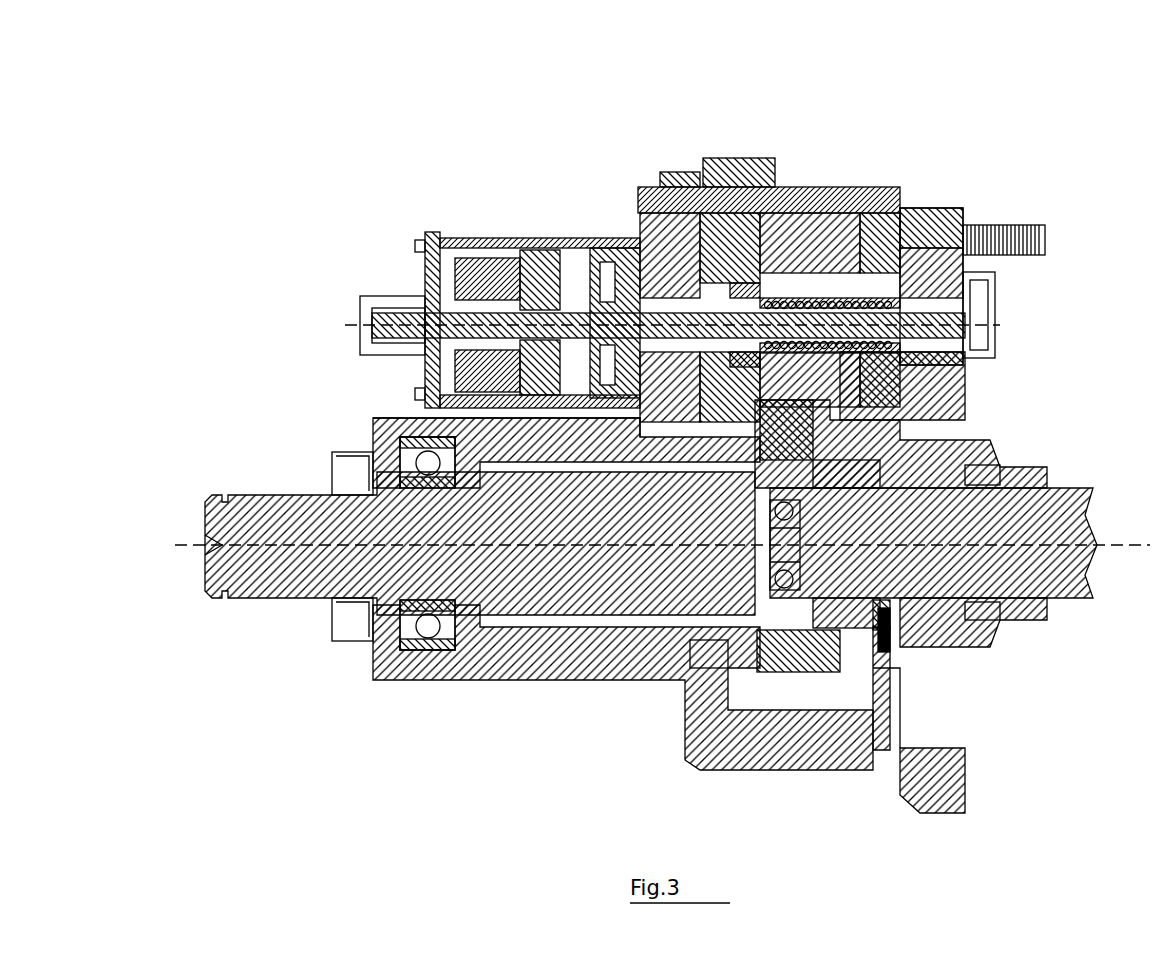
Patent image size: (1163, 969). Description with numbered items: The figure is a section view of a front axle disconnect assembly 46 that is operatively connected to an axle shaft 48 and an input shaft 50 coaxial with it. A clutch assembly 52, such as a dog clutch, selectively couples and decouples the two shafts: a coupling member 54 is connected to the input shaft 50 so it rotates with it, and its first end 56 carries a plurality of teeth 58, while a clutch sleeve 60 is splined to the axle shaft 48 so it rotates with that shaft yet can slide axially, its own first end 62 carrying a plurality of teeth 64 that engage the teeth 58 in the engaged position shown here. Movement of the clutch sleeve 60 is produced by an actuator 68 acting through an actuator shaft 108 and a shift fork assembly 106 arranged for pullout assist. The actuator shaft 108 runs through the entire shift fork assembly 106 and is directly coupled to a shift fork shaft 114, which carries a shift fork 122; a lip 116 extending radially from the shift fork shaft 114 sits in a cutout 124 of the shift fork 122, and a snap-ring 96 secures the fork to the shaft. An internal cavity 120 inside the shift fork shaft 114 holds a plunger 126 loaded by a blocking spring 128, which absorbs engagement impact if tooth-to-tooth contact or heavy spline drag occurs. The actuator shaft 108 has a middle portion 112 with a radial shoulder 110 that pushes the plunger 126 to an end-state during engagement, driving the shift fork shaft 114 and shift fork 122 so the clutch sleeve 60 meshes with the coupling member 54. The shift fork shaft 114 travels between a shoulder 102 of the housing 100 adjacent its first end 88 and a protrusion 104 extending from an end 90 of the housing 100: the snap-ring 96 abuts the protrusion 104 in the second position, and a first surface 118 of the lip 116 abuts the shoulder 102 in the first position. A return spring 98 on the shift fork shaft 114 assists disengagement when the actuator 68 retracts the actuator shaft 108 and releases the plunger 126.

The axle disconnect assembly 46 is at (1032, 165).
The axle shaft 48 is at (290, 580).
The input shaft 50 is at (1060, 492).
The clutch assembly 52 is at (828, 682).
The coupling member 54 is at (912, 645).
The first end 56 is at (760, 418).
The plurality of teeth 58 is at (870, 652).
The clutch sleeve 60 is at (772, 650).
The first end 62 is at (892, 700).
The plurality of teeth 64 is at (892, 656).
The actuator 68 is at (440, 230).
The first end 88 is at (600, 414).
The end 90 is at (990, 270).
The snap-ring 96 is at (868, 290).
The return spring 98 is at (928, 280).
The housing 100 is at (807, 467).
The shoulder 102 is at (740, 352).
The protrusion 104 is at (882, 285).
The shift fork assembly 106 is at (930, 236).
The actuator shaft 108 is at (592, 318).
The shoulder 110 is at (705, 305).
The middle portion 112 is at (640, 212).
The shift fork shaft 114 is at (828, 272).
The lip 116 is at (772, 298).
The first surface 118 is at (735, 353).
The internal cavity 120 is at (898, 245).
The shift fork 122 is at (940, 400).
The cutout 124 is at (743, 285).
The plunger 126 is at (722, 355).
The blocking spring 128 is at (775, 340).